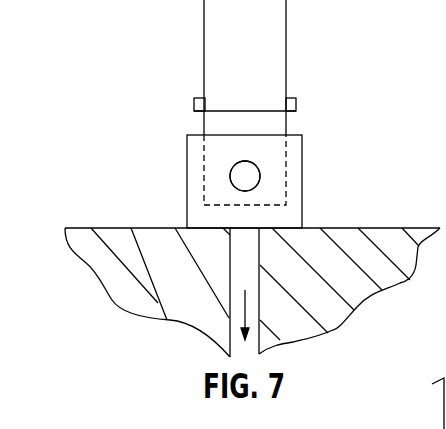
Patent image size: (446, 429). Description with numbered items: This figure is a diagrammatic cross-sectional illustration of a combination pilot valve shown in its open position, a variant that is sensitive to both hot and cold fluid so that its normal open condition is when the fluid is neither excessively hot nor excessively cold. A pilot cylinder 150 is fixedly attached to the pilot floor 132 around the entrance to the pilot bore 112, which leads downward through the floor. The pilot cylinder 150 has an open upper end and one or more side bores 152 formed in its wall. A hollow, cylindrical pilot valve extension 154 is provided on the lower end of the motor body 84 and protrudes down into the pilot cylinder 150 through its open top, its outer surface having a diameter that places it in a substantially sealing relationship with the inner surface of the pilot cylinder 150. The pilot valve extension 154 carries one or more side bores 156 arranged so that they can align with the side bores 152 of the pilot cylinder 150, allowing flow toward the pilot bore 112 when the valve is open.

The motor body 84 is at (263, 10).
The pilot valve extension 154 is at (265, 123).
The pilot cylinder 150 is at (187, 176).
The side bores 152 is at (242, 171).
The side bores 156 is at (252, 176).
The pilot floor 132 is at (96, 228).
The pilot bore 112 is at (247, 272).